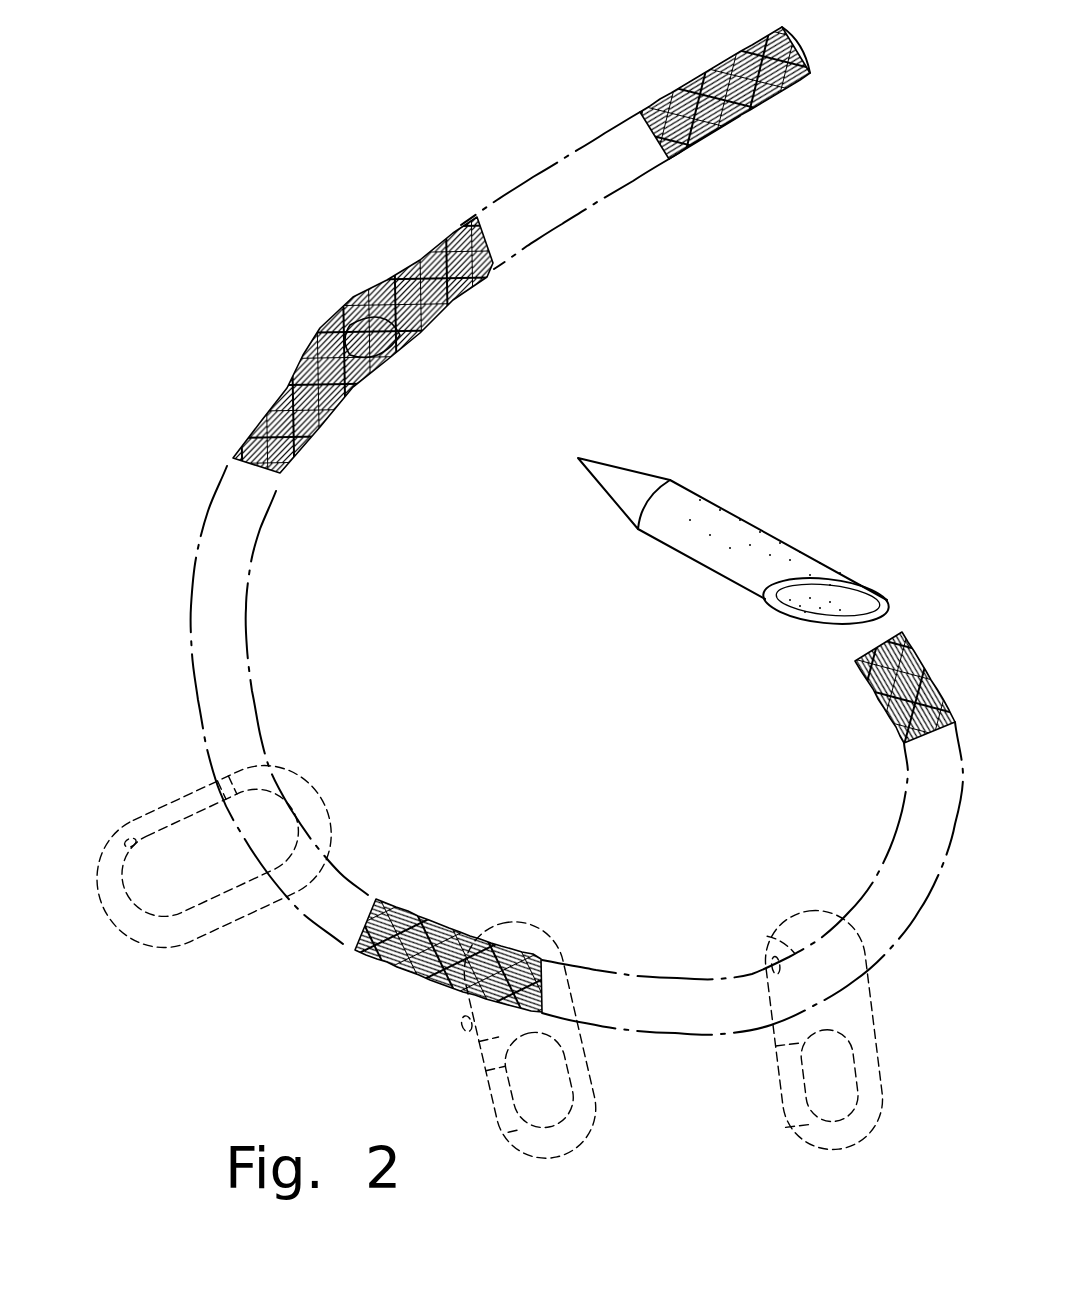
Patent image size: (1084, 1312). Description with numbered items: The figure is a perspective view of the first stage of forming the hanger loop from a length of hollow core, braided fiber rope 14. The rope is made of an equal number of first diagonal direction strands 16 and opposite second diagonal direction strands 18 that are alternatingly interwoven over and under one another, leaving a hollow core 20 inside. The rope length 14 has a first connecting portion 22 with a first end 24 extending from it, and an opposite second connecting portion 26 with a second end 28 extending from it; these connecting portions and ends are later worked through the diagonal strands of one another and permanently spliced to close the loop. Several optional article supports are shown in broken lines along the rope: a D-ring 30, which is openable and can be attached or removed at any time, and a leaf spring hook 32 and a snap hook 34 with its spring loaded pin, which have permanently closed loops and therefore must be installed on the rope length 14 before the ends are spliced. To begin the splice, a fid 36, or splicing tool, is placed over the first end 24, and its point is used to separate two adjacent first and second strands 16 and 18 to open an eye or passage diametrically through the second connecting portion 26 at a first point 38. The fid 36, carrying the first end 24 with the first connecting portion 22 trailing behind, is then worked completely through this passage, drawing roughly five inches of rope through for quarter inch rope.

The hollow core braided fiber rope 14 is at (346, 1017).
The first diagonal direction strands 16 is at (757, 108).
The second diagonal direction strands 18 is at (742, 52).
The hollow core 20 is at (226, 598).
The first connecting portion 22 is at (868, 892).
The first end 24 is at (858, 664).
The second connecting portion 26 is at (272, 394).
The second end 28 is at (812, 62).
The D-ring 30 is at (175, 800).
The leaf spring hook 32 is at (888, 1068).
The snap hook 34 is at (597, 1100).
The fid 36 is at (770, 538).
The first point 38 is at (373, 333).